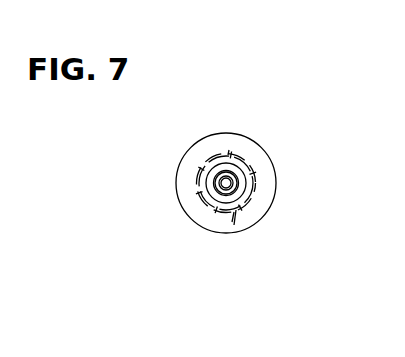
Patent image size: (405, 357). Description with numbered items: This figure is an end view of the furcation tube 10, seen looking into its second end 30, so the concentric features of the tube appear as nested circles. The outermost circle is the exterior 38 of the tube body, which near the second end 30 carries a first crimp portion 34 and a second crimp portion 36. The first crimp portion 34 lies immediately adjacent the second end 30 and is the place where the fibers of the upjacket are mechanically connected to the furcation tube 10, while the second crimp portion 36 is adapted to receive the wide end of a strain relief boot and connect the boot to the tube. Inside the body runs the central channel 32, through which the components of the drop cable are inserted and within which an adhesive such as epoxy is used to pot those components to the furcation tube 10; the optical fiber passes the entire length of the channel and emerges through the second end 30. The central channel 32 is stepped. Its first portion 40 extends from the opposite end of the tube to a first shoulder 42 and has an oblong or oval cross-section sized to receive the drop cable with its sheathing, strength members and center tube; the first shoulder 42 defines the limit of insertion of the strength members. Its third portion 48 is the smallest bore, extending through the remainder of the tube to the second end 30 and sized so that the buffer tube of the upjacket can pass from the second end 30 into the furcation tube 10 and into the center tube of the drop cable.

The furcation tube 10 is at (180, 170).
The second end 30 is at (218, 204).
The central channel 32 is at (236, 189).
The first crimp portion 34 is at (229, 181).
The second crimp portion 36 is at (208, 150).
The exterior 38 is at (190, 215).
The first portion 40 is at (236, 140).
The first shoulder 42 is at (231, 186).
The third portion 48 is at (226, 183).